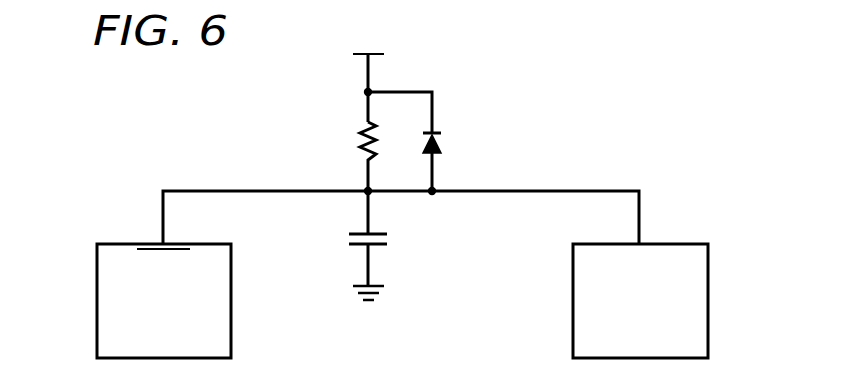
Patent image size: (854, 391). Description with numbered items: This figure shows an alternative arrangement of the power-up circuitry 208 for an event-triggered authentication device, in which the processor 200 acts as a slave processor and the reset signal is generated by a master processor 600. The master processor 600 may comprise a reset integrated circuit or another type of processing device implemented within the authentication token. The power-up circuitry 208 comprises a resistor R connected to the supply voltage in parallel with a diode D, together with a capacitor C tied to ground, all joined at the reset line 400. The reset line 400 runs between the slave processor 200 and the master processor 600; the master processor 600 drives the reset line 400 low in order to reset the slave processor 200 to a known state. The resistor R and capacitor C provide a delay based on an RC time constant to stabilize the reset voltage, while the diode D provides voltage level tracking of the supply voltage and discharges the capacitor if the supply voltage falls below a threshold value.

The processor 200 is at (97, 298).
The power-up circuitry 208 is at (555, 85).
The reset line 400 is at (233, 191).
The master processor 600 is at (709, 302).